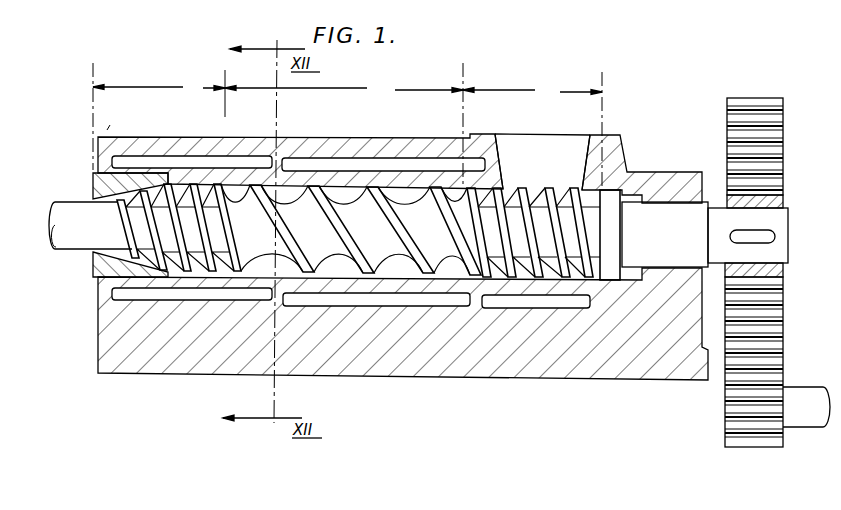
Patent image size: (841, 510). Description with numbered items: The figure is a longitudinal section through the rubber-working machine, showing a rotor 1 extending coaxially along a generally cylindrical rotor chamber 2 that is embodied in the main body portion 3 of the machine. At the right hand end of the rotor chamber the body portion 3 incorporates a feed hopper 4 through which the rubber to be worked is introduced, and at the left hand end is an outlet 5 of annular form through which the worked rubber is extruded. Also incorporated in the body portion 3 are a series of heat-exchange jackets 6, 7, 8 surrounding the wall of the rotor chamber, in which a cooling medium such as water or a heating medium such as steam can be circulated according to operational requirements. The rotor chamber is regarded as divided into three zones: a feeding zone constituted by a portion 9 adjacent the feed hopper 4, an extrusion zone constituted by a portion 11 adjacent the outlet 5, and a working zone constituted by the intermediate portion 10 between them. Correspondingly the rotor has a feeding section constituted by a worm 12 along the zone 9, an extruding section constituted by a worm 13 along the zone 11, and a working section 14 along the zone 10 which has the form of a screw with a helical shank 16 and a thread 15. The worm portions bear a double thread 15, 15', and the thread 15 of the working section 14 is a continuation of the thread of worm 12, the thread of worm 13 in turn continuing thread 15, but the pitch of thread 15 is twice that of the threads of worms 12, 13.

The rotor 1 is at (88, 243).
The rotor chamber 2 is at (368, 258).
The main body portion 3 is at (412, 353).
The feed hopper 4 is at (552, 145).
The outlet 5 is at (93, 198).
The heat-exchange jacket 6 is at (529, 302).
The heat-exchange jacket 7 is at (363, 297).
The heat-exchange jacket 8 is at (123, 293).
The feeding zone portion 9 is at (532, 129).
The working zone portion 10 is at (344, 125).
The extrusion zone portion 11 is at (159, 116).
The worm 12 is at (535, 198).
The worm 13 is at (200, 192).
The working section 14 is at (287, 228).
The thread 15 is at (344, 229).
The thread 15' is at (400, 194).
The helical shank 16 is at (350, 207).